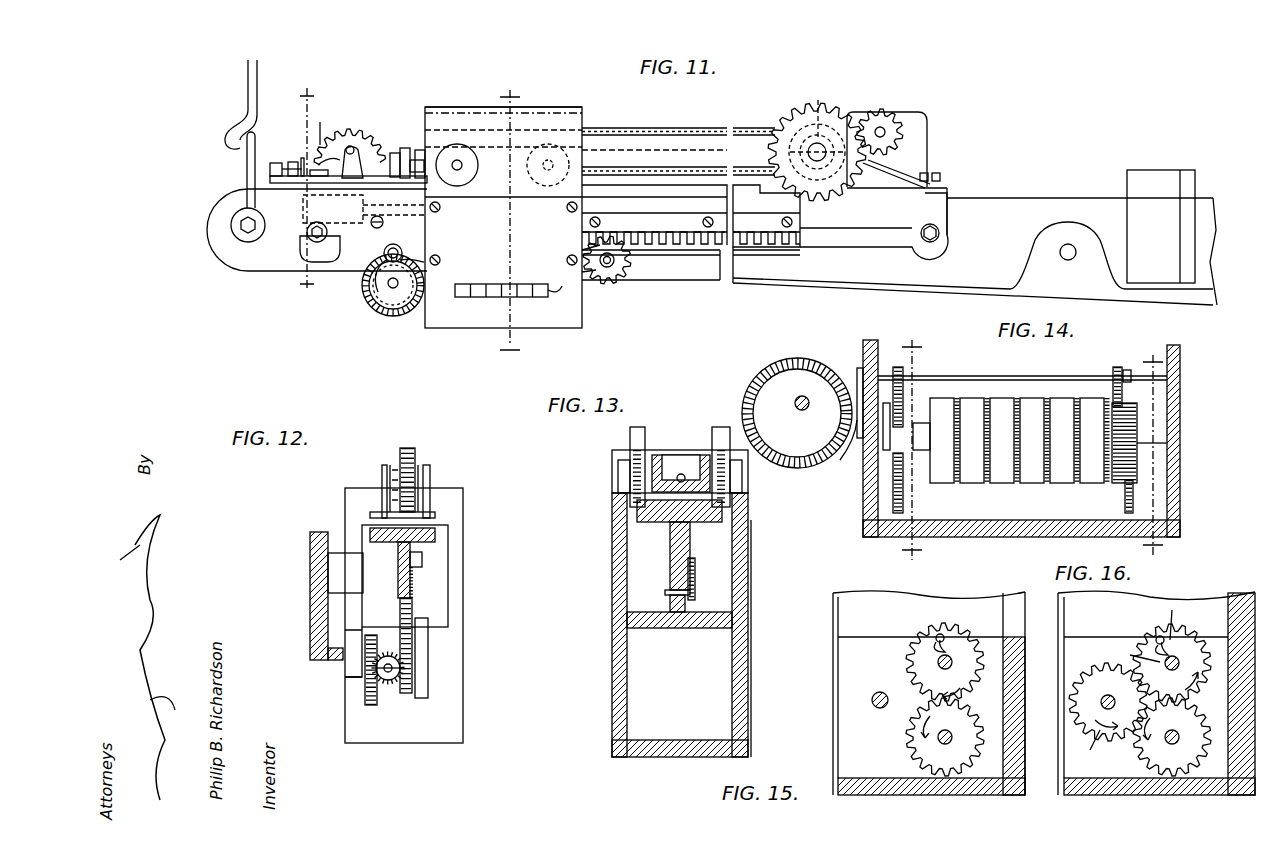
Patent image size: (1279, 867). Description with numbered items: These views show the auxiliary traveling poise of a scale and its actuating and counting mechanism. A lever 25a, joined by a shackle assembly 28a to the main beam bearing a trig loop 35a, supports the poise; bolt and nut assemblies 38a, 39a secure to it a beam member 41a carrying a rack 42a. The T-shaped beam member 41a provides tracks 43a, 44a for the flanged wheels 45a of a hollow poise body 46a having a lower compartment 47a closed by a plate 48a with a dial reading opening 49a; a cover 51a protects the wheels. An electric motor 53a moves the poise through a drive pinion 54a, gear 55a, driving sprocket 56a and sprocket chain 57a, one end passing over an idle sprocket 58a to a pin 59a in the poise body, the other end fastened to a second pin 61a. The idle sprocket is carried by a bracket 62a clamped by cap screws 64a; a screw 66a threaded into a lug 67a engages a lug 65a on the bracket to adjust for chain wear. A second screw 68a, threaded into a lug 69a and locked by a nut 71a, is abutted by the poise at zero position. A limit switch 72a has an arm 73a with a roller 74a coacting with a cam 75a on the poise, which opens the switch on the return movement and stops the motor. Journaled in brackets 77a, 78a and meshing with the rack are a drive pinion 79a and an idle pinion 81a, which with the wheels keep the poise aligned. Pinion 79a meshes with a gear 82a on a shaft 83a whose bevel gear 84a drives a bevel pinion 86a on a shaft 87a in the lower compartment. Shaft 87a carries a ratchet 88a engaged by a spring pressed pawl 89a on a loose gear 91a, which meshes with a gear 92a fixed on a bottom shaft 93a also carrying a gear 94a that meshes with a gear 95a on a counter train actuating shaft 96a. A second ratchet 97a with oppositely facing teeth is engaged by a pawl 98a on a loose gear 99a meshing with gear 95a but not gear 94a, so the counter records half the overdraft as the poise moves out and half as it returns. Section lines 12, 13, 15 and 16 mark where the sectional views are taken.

In FIG. 11, the line 12— 12 is at (298, 187).
In FIG. 11, the line 13— 13 is at (507, 221).
In FIG. 14, the line 15— 15 is at (911, 450).
In FIG. 14, the line 16— 16 is at (1154, 462).
In FIG. 11, the lever 25a is at (995, 208).
In FIG. 12, the lever 25a is at (310, 557).
In FIG. 11, the shackle assembly 28a is at (248, 82).
In FIG. 12, the trig loop 35a is at (350, 632).
In FIG. 11, the bolt and nut assembly 38a is at (312, 236).
In FIG. 11, the bolt and nut assembly 39a is at (930, 242).
In FIG. 12, the bolt and nut assembly 39a is at (335, 590).
In FIG. 11, the beam member 41a is at (870, 220).
In FIG. 12, the beam member 41a is at (398, 565).
In FIG. 13, the beam member 41a is at (670, 550).
In FIG. 11, the rack 42a is at (636, 228).
In FIG. 12, the rack 42a is at (415, 592).
In FIG. 13, the rack 42a is at (696, 580).
In FIG. 12, the track 43a is at (365, 530).
In FIG. 13, the track 43a is at (627, 522).
In FIG. 11, the track 44a is at (630, 175).
In FIG. 12, the track 44a is at (438, 535).
In FIG. 13, the track 44a is at (740, 522).
In FIG. 11, the flanged wheels 45a is at (472, 160).
In FIG. 13, the flanged wheels 45a is at (715, 440).
In FIG. 13, the hollow poise body 46a is at (620, 597).
In FIG. 13, the lower compartment 47a is at (632, 665).
In FIG. 11, the plate 48a is at (540, 322).
In FIG. 13, the plate 48a is at (748, 637).
In FIG. 11, the dial reading opening 49a is at (488, 284).
In FIG. 11, the cover 51a is at (556, 107).
In FIG. 11, the electric motor 53a is at (915, 118).
In FIG. 11, the drive pinion 54a is at (880, 110).
In FIG. 11, the gear 55a is at (790, 135).
In FIG. 11, the driving sprocket 56a is at (822, 100).
In FIG. 11, the sprocket chain 57a is at (662, 128).
In FIG. 12, the sprocket chain 57a is at (400, 455).
In FIG. 11, the idle sprocket 58a is at (360, 140).
In FIG. 12, the idle sprocket 58a is at (410, 448).
In FIG. 11, the pin 59a is at (503, 128).
In FIG. 11, the second pin 61a is at (600, 155).
In FIG. 11, the bracket 62a is at (348, 128).
In FIG. 12, the bracket 62a is at (430, 495).
In FIG. 11, the cap screws 64a is at (320, 122).
In FIG. 11, the lug 65a is at (302, 158).
In FIG. 11, the screw 66a is at (288, 170).
In FIG. 11, the lug 67a is at (270, 148).
In FIG. 11, the second screw 68a is at (412, 162).
In FIG. 11, the lug 69a is at (417, 152).
In FIG. 11, the nut 71a is at (404, 150).
In FIG. 11, the limit switch 72a is at (341, 241).
In FIG. 11, the arm 73a is at (364, 209).
In FIG. 11, the roller 74a is at (441, 207).
In FIG. 11, the cam 75a is at (425, 215).
In FIG. 11, the bracket 77a is at (441, 260).
In FIG. 11, the bracket 78a is at (560, 279).
In FIG. 11, the drive pinion 79a is at (385, 262).
In FIG. 12, the drive pinion 79a is at (412, 616).
In FIG. 11, the idle pinion 81a is at (610, 284).
In FIG. 11, the gear 82a is at (393, 292).
In FIG. 12, the gear 82a is at (404, 690).
In FIG. 11, the shaft 83a is at (408, 318).
In FIG. 12, the shaft 83a is at (426, 665).
In FIG. 14, the shaft 83a is at (797, 413).
In FIG. 11, the bevel gear 84a is at (375, 305).
In FIG. 12, the bevel gear 84a is at (368, 690).
In FIG. 14, the bevel gear 84a is at (757, 360).
In FIG. 12, the bevel pinion 86a is at (390, 700).
In FIG. 14, the bevel pinion 86a is at (850, 440).
In FIG. 14, the shaft 87a is at (930, 395).
In FIG. 15, the shaft 87a is at (935, 662).
In FIG. 16, the shaft 87a is at (1178, 656).
In FIG. 14, the ratchet 88a is at (915, 368).
In FIG. 15, the ratchet 88a is at (955, 648).
In FIG. 15, the spring pressed pawl 89a is at (932, 642).
In FIG. 14, the gear 91a is at (903, 357).
In FIG. 15, the gear 91a is at (943, 634).
In FIG. 14, the gear 92a is at (895, 520).
In FIG. 15, the gear 92a is at (908, 735).
In FIG. 14, the bottom shaft 93a is at (925, 483).
In FIG. 15, the bottom shaft 93a is at (940, 738).
In FIG. 16, the bottom shaft 93a is at (1175, 744).
In FIG. 14, the gear 94a is at (1125, 508).
In FIG. 16, the gear 94a is at (1145, 760).
In FIG. 14, the gear 95a is at (1160, 398).
In FIG. 16, the gear 95a is at (1093, 750).
In FIG. 14, the counter train actuating shaft 96a is at (1160, 420).
In FIG. 15, the counter train actuating shaft 96a is at (872, 700).
In FIG. 16, the counter train actuating shaft 96a is at (1108, 702).
In FIG. 16, the second ratchet 97a is at (1165, 665).
In FIG. 14, the pawl 98a is at (1127, 370).
In FIG. 16, the pawl 98a is at (1172, 610).
In FIG. 14, the gear 99a is at (1115, 375).
In FIG. 16, the gear 99a is at (1156, 643).